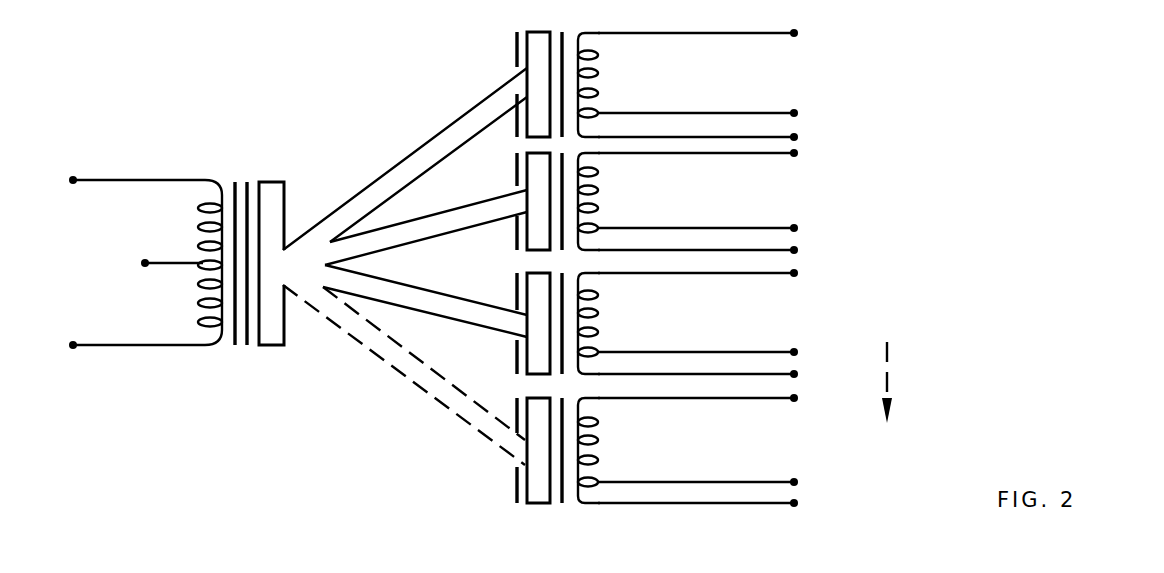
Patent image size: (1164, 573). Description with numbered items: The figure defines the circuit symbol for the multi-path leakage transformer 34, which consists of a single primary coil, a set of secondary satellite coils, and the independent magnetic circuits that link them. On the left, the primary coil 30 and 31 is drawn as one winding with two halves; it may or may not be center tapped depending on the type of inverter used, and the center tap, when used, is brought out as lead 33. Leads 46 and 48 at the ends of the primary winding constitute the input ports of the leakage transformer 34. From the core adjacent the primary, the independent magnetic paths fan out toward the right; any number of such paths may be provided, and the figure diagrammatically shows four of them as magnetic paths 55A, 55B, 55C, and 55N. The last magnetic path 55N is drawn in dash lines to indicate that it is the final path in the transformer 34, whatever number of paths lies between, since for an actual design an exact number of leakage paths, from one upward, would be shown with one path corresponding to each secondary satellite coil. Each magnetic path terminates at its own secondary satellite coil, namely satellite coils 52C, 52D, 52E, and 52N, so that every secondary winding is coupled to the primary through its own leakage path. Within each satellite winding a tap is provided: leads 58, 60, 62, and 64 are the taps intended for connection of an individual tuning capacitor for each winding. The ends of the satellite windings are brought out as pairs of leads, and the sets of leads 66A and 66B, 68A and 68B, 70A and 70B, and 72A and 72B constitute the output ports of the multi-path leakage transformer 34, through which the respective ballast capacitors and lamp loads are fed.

The primary coil 30 is at (203, 301).
The primary coil 31 is at (203, 230).
The center tap 33 is at (178, 268).
The multi-path leakage transformer 34 is at (405, 72).
The input lead 46 is at (128, 178).
The input lead 48 is at (113, 347).
The magnetic path 55A is at (452, 124).
The magnetic path 55B is at (495, 196).
The magnetic path 55C is at (433, 291).
The magnetic path 55N is at (468, 426).
The secondary satellite coil 52C is at (598, 73).
The secondary satellite coil 52D is at (598, 190).
The secondary satellite coil 52E is at (598, 313).
The secondary satellite coil 52N is at (598, 440).
The tap lead 58 is at (710, 113).
The tap lead 60 is at (695, 228).
The tap lead 62 is at (695, 352).
The tap lead 64 is at (693, 482).
The output lead 66A is at (695, 33).
The output lead 66B is at (770, 137).
The output lead 68A is at (697, 153).
The output lead 68B is at (758, 250).
The output lead 70A is at (695, 273).
The output lead 70B is at (768, 374).
The output lead 72A is at (700, 398).
The output lead 72B is at (763, 502).